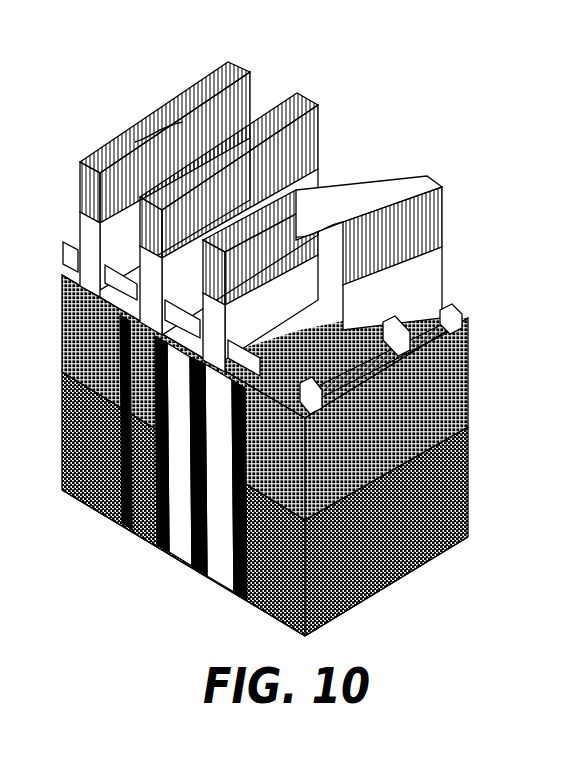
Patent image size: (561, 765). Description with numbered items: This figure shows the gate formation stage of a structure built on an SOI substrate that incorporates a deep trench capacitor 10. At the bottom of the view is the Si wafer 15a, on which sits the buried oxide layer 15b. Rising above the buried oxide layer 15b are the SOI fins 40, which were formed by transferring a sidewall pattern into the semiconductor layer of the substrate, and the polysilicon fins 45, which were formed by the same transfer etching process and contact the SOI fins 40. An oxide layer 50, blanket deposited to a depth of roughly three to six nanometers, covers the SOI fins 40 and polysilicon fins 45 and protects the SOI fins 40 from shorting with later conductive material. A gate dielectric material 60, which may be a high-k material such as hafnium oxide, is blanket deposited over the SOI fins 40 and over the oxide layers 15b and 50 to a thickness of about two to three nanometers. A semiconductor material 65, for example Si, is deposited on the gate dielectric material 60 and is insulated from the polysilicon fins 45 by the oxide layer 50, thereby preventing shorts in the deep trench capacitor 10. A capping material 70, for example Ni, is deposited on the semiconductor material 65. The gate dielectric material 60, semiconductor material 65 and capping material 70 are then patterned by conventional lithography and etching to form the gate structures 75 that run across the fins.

The deep trench capacitor 10 is at (212, 598).
The Si wafer 15a is at (470, 495).
The buried oxide layer 15b is at (470, 400).
The SOI fins 40 is at (442, 318).
The polysilicon fins 45 is at (190, 440).
The oxide layer 50 is at (200, 350).
The gate dielectric material 60 is at (455, 292).
The semiconductor material 65 is at (458, 247).
The capping material 70 is at (425, 185).
The gate structures 75 is at (120, 106).